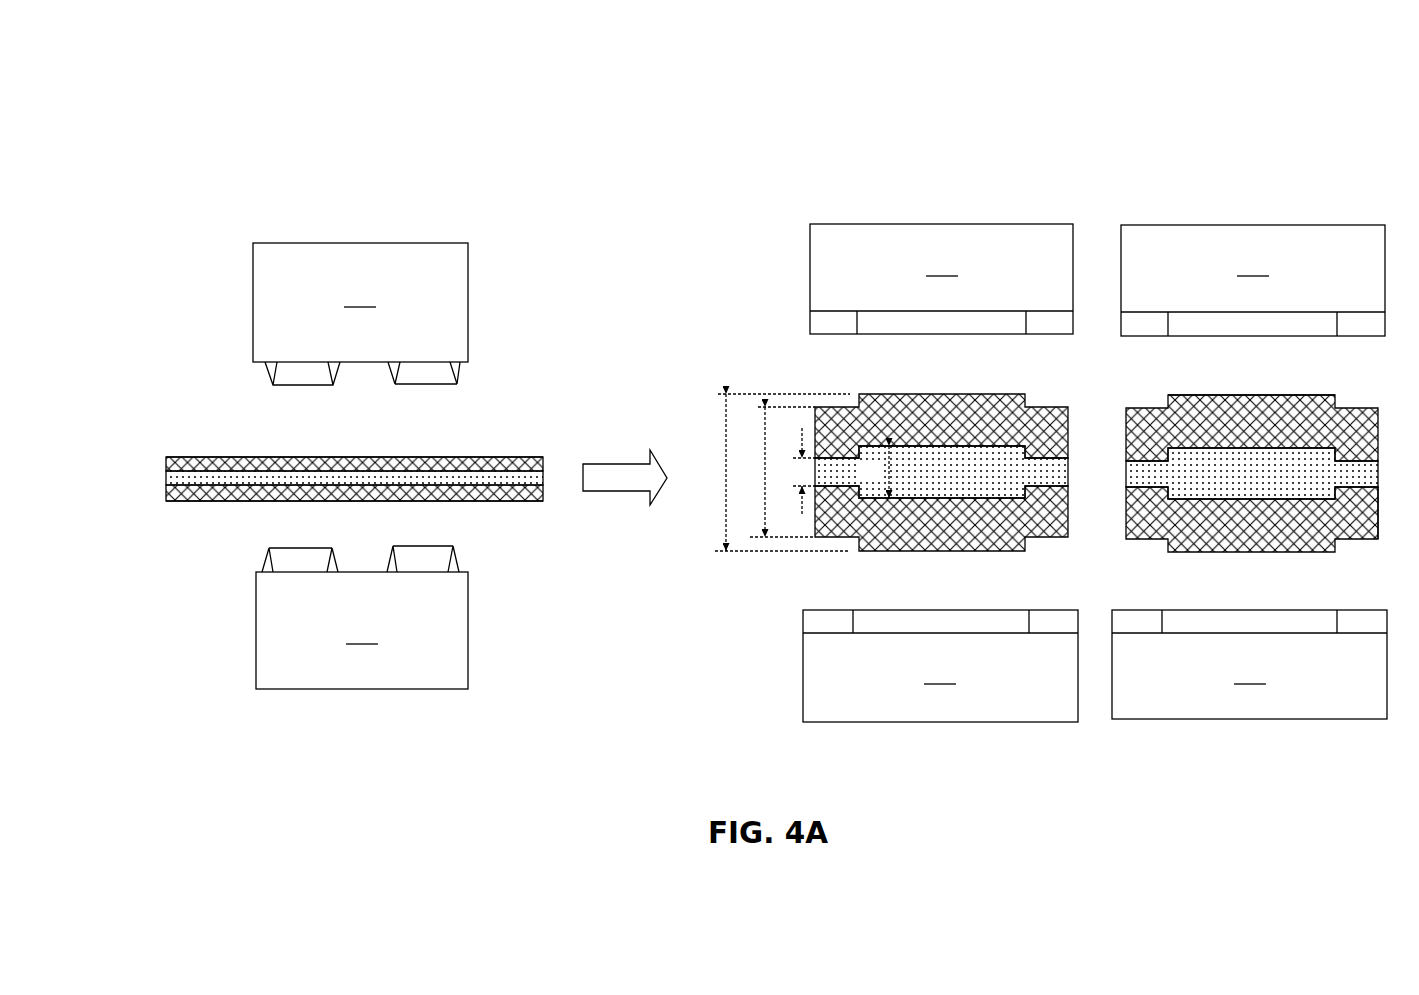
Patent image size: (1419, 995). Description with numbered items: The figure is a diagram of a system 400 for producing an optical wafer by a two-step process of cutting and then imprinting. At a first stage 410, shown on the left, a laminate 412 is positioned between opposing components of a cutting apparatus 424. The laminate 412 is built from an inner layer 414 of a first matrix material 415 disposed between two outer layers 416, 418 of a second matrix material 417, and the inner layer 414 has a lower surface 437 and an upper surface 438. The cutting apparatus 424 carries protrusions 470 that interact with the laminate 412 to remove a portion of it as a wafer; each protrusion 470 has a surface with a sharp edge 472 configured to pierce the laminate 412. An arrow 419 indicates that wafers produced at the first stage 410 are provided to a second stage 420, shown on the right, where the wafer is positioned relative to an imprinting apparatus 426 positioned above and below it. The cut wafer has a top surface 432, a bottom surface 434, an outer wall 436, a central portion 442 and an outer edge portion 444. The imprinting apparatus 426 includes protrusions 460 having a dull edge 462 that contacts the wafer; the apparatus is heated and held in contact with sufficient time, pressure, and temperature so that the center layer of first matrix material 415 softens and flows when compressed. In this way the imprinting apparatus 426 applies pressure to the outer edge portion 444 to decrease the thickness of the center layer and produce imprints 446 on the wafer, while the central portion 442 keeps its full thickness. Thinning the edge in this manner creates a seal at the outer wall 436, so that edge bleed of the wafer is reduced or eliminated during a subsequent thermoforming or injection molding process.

The system 400 is at (290, 118).
The first stage 410 is at (213, 212).
The laminate 412 is at (170, 408).
The inner layer 414 is at (166, 478).
The first matrix material 415 is at (405, 480).
The outer layer 416 is at (180, 502).
The second matrix material 417 is at (268, 463).
The outer layer 418 is at (176, 455).
The arrow 419 is at (632, 492).
The second stage 420 is at (690, 212).
The cutting apparatus 424 is at (360, 466).
The imprinting apparatus 426 is at (1095, 473).
The top surface 432 is at (1205, 395).
The bottom surface 434 is at (1208, 552).
The outer wall 436 is at (1078, 522).
The lower surface 437 is at (950, 498).
The upper surface 438 is at (940, 447).
The central portion 442 is at (1245, 400).
The outer edge portion 444 is at (1387, 540).
The imprint 446 is at (1355, 390).
The protrusion 460 is at (795, 633).
The dull edge 462 is at (826, 335).
The protrusion 470 is at (462, 372).
The sharp edge 472 is at (455, 380).